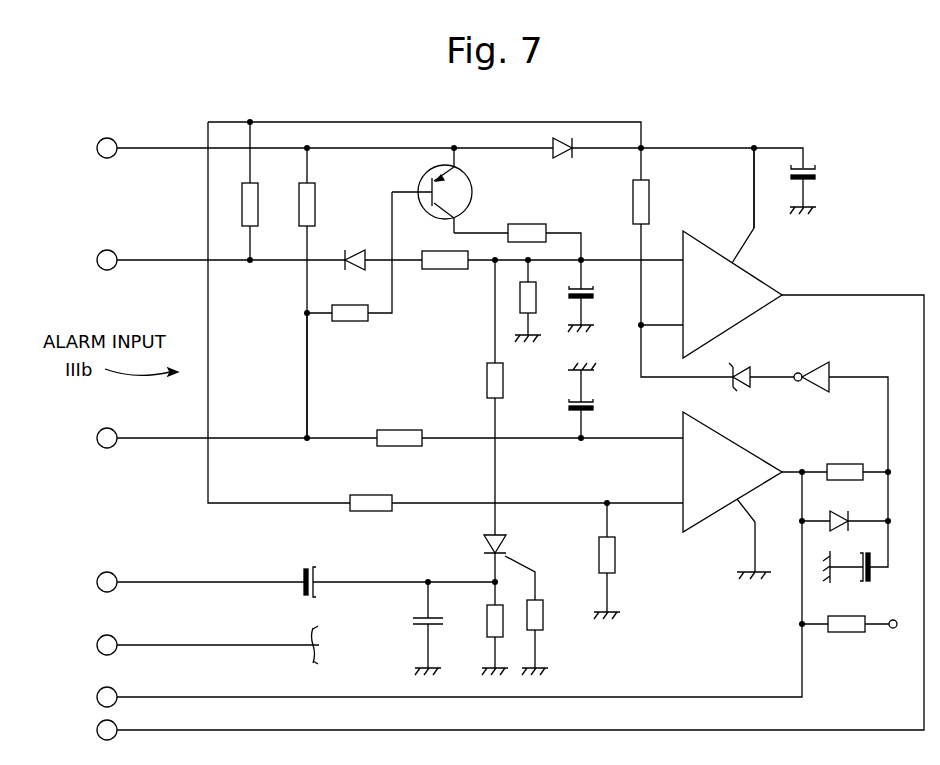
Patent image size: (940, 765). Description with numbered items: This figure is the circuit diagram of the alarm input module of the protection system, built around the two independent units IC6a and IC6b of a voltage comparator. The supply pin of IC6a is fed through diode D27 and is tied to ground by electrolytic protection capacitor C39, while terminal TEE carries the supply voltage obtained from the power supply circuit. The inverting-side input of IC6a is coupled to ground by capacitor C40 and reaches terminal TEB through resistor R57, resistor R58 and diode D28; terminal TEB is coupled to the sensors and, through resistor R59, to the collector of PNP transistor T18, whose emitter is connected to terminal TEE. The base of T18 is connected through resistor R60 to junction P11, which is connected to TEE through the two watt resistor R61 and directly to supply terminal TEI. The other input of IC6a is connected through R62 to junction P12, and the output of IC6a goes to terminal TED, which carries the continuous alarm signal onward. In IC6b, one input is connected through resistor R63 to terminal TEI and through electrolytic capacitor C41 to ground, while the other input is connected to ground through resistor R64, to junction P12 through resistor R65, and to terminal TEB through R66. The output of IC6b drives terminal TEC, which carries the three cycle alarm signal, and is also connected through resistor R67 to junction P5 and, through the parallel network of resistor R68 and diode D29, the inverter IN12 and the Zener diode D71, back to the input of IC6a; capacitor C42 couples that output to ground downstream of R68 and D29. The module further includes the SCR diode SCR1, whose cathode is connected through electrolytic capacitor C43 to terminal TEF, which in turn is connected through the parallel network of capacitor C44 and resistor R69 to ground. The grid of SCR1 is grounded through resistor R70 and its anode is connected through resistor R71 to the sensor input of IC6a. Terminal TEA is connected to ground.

The terminal TEE is at (97, 148).
The terminal TEB is at (97, 260).
The supply terminal TEI is at (97, 438).
The terminal TEF is at (97, 582).
The terminal TEA is at (97, 645).
The terminal TEC is at (97, 697).
The terminal TED is at (97, 730).
The resistor R66 is at (254, 200).
The two watt resistor R61 is at (313, 205).
The diode D28 is at (357, 252).
The resistor R57 is at (444, 256).
The PNP transistor T18 is at (464, 202).
The diode D27 is at (557, 160).
The resistor R59 is at (525, 226).
The resistor R58 is at (535, 298).
The capacitor C40 is at (592, 291).
The resistor R62 is at (650, 203).
The junction P12 is at (700, 147).
The electrolytic protection capacitor C39 is at (815, 179).
The voltage comparator unit IC6a is at (732, 294).
The voltage comparator unit IC6b is at (732, 472).
The resistor R60 is at (346, 322).
The junction P11 is at (307, 345).
The resistor R71 is at (490, 386).
The electrolytic capacitor C41 is at (593, 403).
The resistor R63 is at (399, 432).
The resistor R65 is at (370, 501).
The Zener diode D71 is at (740, 372).
The inverter IN12 is at (832, 372).
The resistor R68 is at (846, 468).
The diode D29 is at (839, 516).
The capacitor C42 is at (858, 580).
The resistor R67 is at (851, 634).
The junction P5 is at (896, 629).
The SCR diode SCR1 is at (505, 545).
The resistor R64 is at (618, 556).
The resistor R69 is at (488, 622).
The resistor R70 is at (546, 616).
The electrolytic capacitor C43 is at (318, 580).
The capacitor C44 is at (416, 624).